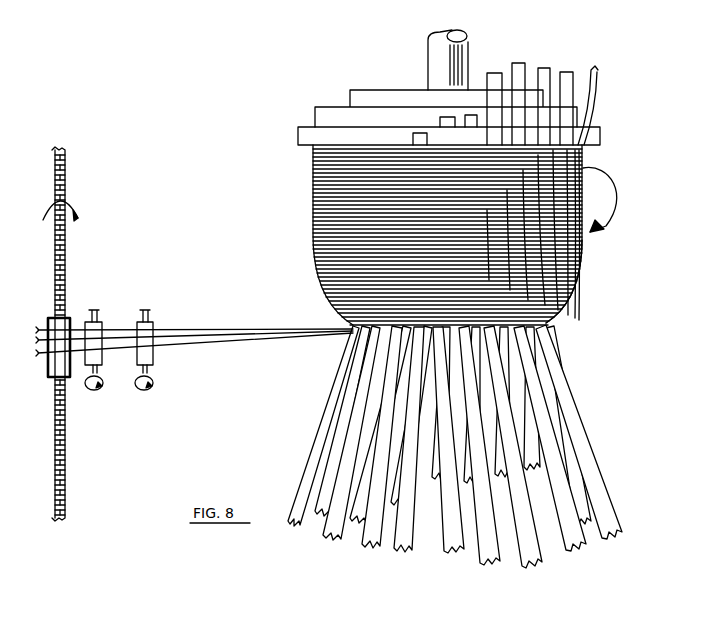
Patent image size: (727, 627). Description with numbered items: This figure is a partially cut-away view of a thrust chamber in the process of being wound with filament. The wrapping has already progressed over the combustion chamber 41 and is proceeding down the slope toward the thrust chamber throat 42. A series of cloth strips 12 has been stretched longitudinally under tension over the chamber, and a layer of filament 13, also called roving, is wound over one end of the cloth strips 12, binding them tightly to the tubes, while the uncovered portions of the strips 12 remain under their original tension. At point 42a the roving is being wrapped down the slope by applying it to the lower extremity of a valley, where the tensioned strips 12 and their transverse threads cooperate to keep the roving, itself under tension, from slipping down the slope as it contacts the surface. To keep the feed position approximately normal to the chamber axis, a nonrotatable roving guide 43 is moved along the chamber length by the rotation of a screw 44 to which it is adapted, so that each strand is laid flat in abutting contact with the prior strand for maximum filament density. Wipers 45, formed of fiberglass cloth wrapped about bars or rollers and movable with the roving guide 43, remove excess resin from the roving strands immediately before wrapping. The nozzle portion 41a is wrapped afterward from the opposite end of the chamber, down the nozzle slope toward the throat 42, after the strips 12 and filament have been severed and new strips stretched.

The cloth strips 12 is at (570, 398).
The layer of filament 13 is at (332, 235).
The combustion chamber 41 is at (452, 237).
The nozzle portion 41a is at (345, 463).
The thrust chamber throat 42 is at (552, 323).
The point on slope 42a is at (549, 313).
The roving guide 43 is at (53, 363).
The screw 44 is at (53, 283).
The wipers 45 is at (143, 331).